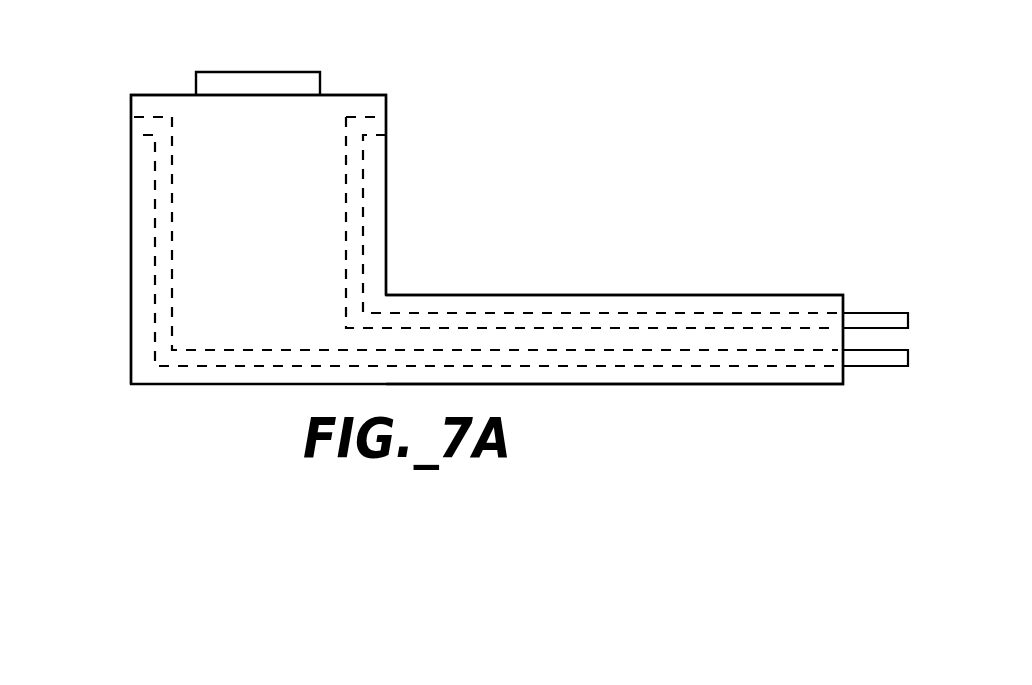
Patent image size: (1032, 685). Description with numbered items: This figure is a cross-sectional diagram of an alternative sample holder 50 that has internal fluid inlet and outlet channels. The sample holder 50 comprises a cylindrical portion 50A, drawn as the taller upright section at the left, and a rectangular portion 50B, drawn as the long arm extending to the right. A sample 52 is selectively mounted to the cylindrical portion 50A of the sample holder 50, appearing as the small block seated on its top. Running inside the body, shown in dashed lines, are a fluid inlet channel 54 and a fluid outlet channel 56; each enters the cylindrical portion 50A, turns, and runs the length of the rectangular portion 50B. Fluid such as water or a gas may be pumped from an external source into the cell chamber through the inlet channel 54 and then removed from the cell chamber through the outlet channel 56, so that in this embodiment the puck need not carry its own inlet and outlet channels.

The sample holder 50 is at (136, 52).
The cylindrical portion 50A is at (130, 211).
The rectangular portion 50B is at (802, 295).
The sample 52 is at (292, 82).
The fluid inlet channel 54 is at (453, 315).
The fluid outlet channel 56 is at (630, 357).